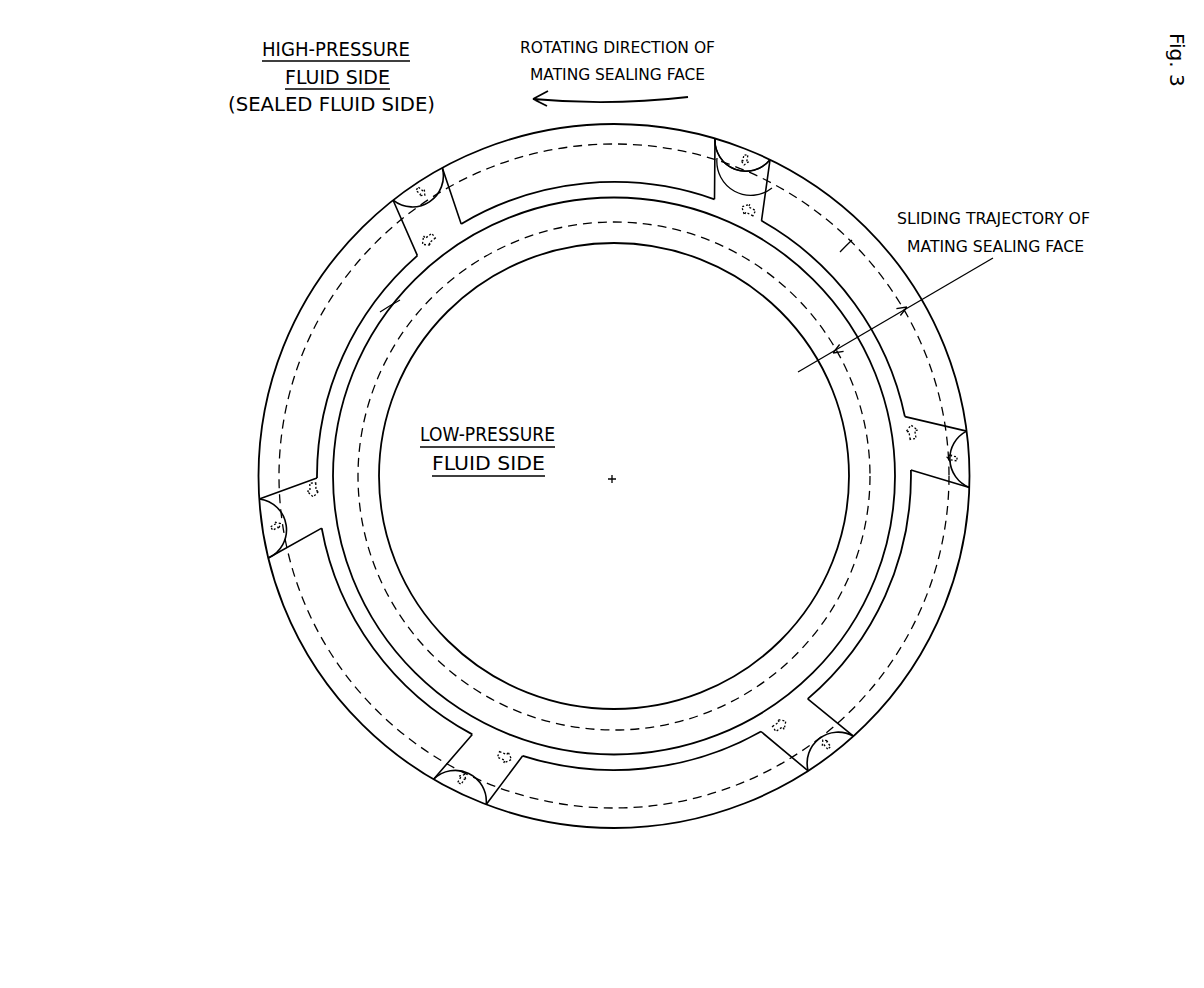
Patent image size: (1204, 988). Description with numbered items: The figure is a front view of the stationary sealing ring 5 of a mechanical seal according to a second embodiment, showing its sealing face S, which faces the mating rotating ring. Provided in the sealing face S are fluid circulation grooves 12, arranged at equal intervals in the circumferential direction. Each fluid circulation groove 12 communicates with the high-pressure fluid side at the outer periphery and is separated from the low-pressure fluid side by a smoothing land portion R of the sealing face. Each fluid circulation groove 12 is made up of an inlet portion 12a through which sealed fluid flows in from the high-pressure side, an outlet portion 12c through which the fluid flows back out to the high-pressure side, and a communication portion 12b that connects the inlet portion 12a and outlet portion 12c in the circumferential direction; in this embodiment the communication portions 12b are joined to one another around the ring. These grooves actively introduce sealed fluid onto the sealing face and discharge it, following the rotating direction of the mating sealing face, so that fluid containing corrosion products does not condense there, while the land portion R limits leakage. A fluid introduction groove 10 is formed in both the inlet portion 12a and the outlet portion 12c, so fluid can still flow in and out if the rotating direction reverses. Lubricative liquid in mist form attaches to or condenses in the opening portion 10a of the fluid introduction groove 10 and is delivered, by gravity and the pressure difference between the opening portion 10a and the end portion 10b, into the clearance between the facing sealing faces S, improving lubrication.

The stationary sealing ring 5 is at (514, 133).
The fluid introduction groove 10 is at (393, 200).
The opening portion 10a is at (738, 142).
The end portion 10b is at (768, 192).
The fluid circulation groove 12 is at (828, 300).
The inlet portion 12a is at (410, 236).
The communication portion 12b is at (386, 313).
The outlet portion 12c is at (775, 195).
The land portion R is at (847, 247).
The sealing face S is at (910, 310).